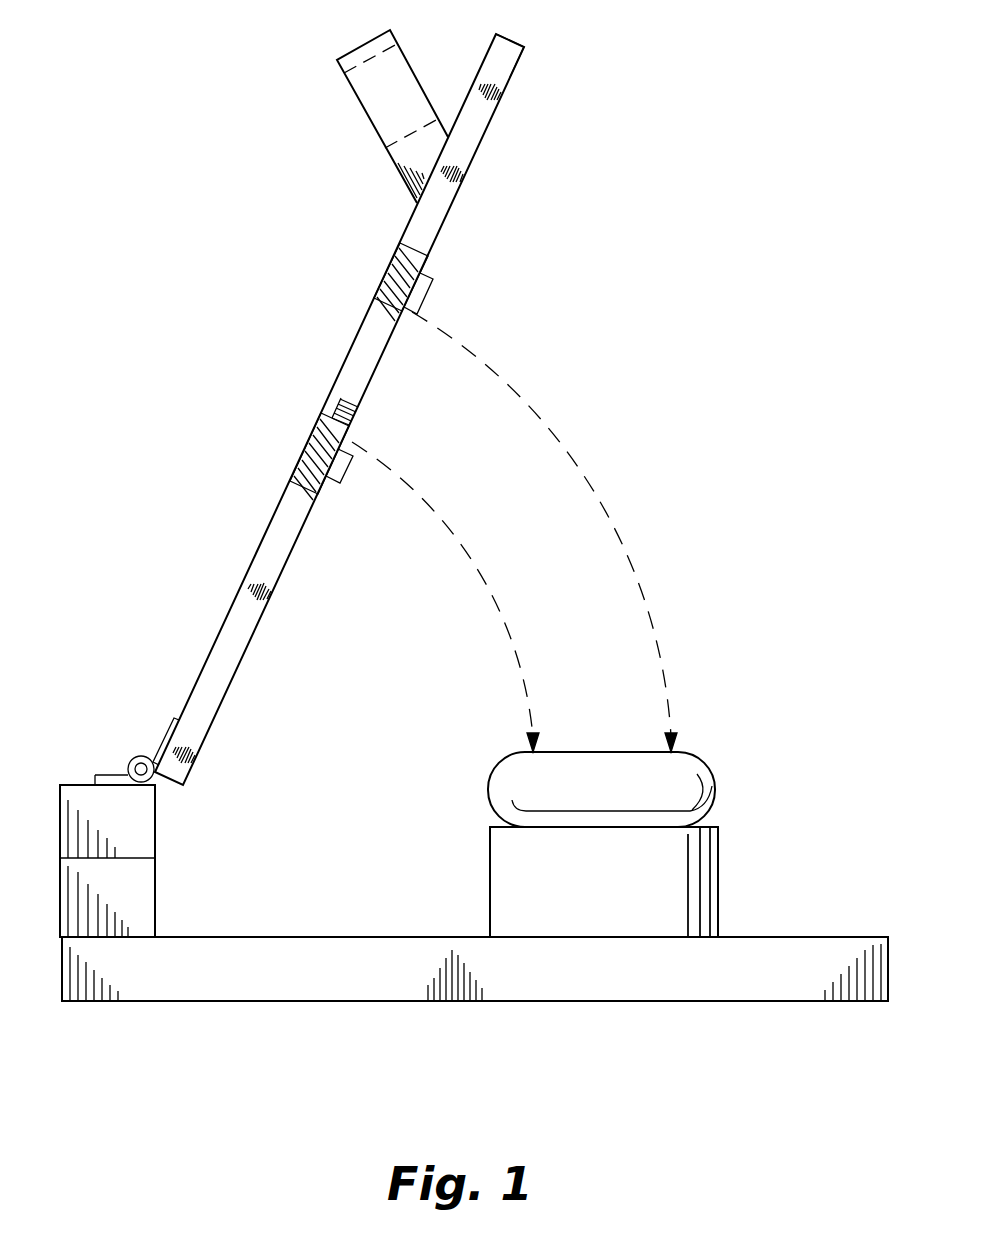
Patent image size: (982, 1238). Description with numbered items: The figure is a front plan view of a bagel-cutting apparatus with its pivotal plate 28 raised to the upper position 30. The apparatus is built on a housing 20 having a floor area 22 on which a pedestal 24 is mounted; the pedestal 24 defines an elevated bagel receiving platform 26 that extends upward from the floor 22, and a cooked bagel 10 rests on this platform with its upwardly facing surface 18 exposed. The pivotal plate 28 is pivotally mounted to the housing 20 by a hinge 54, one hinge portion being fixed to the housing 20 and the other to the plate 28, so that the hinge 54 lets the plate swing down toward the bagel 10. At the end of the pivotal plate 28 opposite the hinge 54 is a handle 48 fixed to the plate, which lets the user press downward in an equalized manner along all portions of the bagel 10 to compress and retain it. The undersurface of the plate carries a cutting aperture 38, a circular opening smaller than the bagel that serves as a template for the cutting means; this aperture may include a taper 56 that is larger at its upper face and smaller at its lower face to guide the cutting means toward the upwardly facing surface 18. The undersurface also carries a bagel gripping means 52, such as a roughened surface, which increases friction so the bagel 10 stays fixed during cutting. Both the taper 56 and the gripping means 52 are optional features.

The bagel 10 is at (620, 797).
The upwardly facing surface 18 is at (600, 752).
The housing 20 is at (197, 937).
The floor area 22 is at (345, 937).
The pedestal 24 is at (612, 887).
The bagel receiving platform 26 is at (714, 827).
The pivotal plate 28 is at (264, 537).
The upper position 30 is at (523, 52).
The cutting aperture 38 is at (373, 297).
The handle 48 is at (337, 60).
The bagel gripping means 52 is at (427, 292).
The hinge 54 is at (133, 758).
The taper 56 is at (393, 313).